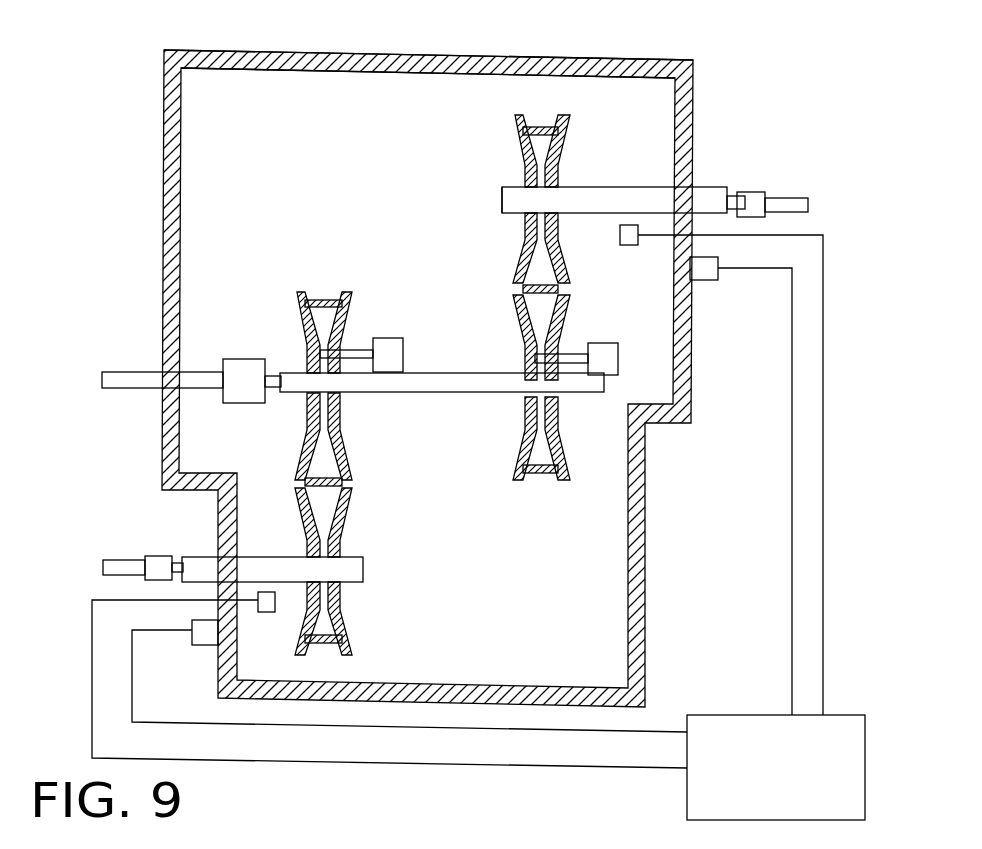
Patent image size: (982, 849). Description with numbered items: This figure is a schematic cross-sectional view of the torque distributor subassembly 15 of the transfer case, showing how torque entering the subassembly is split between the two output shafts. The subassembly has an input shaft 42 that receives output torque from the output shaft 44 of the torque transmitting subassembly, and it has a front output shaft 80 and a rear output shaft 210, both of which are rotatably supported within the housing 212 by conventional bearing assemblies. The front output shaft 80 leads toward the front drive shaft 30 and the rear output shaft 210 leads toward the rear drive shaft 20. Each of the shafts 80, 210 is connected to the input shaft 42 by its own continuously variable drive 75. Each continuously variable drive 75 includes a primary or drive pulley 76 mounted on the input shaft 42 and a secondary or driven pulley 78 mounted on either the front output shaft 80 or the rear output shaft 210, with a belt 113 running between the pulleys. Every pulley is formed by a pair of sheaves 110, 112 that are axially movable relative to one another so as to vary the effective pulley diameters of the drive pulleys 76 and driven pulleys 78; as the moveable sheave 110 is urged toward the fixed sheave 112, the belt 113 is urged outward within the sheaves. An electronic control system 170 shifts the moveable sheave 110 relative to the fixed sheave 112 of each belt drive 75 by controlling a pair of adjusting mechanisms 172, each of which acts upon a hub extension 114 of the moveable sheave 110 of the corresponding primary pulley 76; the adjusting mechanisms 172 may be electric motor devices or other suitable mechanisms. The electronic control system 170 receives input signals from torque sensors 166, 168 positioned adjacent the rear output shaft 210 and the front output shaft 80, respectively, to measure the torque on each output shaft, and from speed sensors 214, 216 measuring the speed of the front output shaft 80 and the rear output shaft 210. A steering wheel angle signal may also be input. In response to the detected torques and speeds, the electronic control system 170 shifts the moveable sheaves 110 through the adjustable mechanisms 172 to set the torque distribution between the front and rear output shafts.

The torque distributor subassembly 15 is at (265, 50).
The rear drive shaft 20 is at (786, 192).
The front drive shaft 30 is at (118, 557).
The input shaft 42 is at (290, 397).
The output shaft 44 is at (138, 370).
The continuously variable drive 75 is at (432, 367).
The primary or drive pulley 76 is at (347, 443).
The secondary or driven pulley 78 is at (357, 510).
The front output shaft 80 is at (358, 584).
The moveable sheave 110 is at (300, 308).
The fixed sheave 112 is at (352, 303).
The belt 113 is at (333, 282).
The hub extension 114 is at (365, 348).
The torque sensor 166 is at (708, 282).
The torque sensor 168 is at (207, 647).
The electronic control system 170 is at (765, 713).
The adjusting mechanism 172 is at (404, 344).
The rear output shaft 210 is at (507, 214).
The housing 212 is at (440, 58).
The speed sensor 214 is at (262, 614).
The speed sensor 216 is at (632, 248).